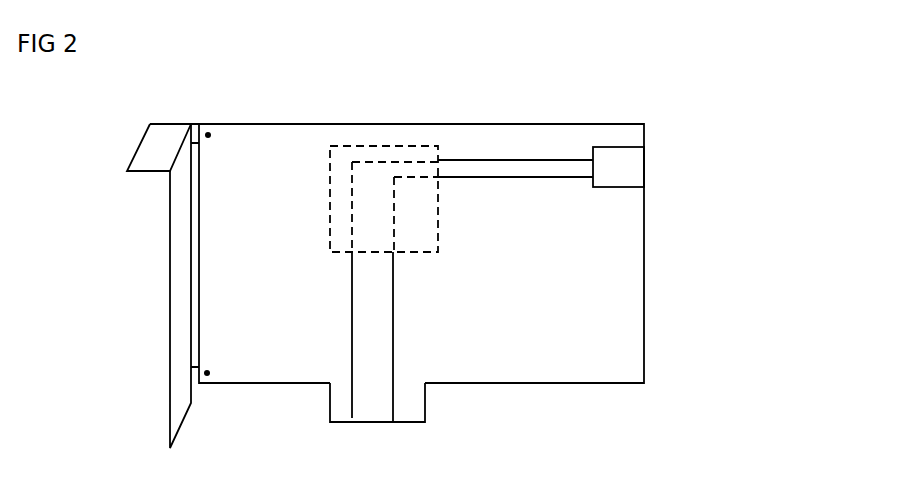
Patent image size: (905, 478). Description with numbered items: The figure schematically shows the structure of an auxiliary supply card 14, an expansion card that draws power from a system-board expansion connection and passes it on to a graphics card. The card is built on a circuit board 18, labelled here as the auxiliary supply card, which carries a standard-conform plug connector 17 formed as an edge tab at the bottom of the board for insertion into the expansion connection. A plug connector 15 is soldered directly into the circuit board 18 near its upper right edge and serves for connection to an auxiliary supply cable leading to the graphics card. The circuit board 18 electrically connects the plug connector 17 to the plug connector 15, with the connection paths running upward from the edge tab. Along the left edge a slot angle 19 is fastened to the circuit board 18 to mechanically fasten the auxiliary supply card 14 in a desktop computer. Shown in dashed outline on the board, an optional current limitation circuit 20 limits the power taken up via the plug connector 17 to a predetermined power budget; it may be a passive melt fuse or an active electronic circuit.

The auxiliary supply card 14 is at (687, 80).
The plug connector 15 is at (635, 153).
The plug connector 17 is at (426, 405).
The circuit board 18 is at (566, 383).
The slot angle 19 is at (152, 139).
The current limitation circuit 20 is at (438, 228).